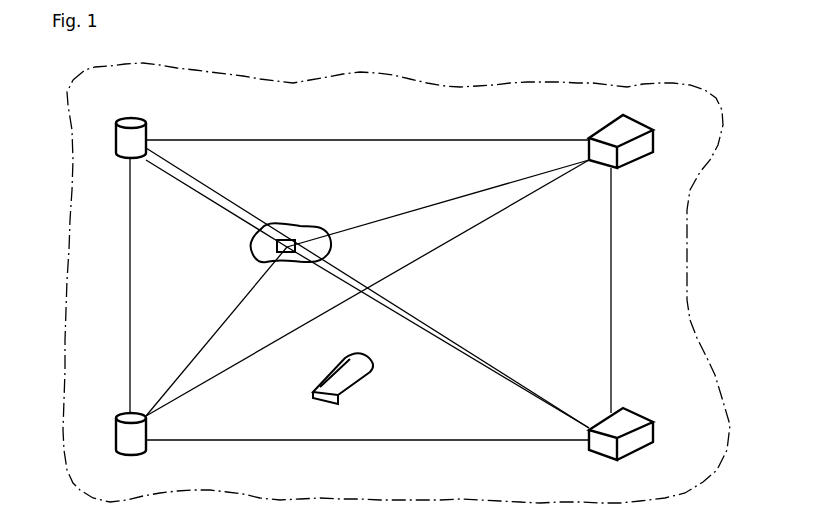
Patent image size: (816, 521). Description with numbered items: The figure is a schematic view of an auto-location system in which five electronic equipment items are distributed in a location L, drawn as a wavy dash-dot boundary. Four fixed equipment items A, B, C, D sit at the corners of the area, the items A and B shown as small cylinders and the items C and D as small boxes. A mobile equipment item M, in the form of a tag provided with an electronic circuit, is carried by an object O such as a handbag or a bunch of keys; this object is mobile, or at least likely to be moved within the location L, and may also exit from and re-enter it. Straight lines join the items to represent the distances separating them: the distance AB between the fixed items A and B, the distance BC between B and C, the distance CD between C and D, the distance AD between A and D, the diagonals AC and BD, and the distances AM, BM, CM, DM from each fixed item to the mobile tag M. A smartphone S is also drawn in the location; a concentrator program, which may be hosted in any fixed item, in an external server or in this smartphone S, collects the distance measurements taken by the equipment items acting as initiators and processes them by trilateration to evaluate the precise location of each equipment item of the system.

The fixed equipment item A is at (127, 120).
The fixed equipment item B is at (115, 442).
The fixed equipment item C is at (637, 414).
The fixed equipment item D is at (637, 126).
The mobile equipment item M is at (286, 238).
The object O is at (312, 225).
The smartphone S is at (320, 384).
The location L is at (722, 410).
The distance between A and D AD is at (338, 140).
The distance between A and B AB is at (130, 288).
The distance between B and C BC is at (378, 438).
The distance between C and D CD is at (612, 297).
The distance between A and C AC is at (437, 320).
The distance between A and M AM is at (197, 198).
The distance between B and M BM is at (218, 326).
The distance between B and D BD is at (395, 270).
The distance between D and M DM is at (395, 212).
The distance between C and M CM is at (438, 345).